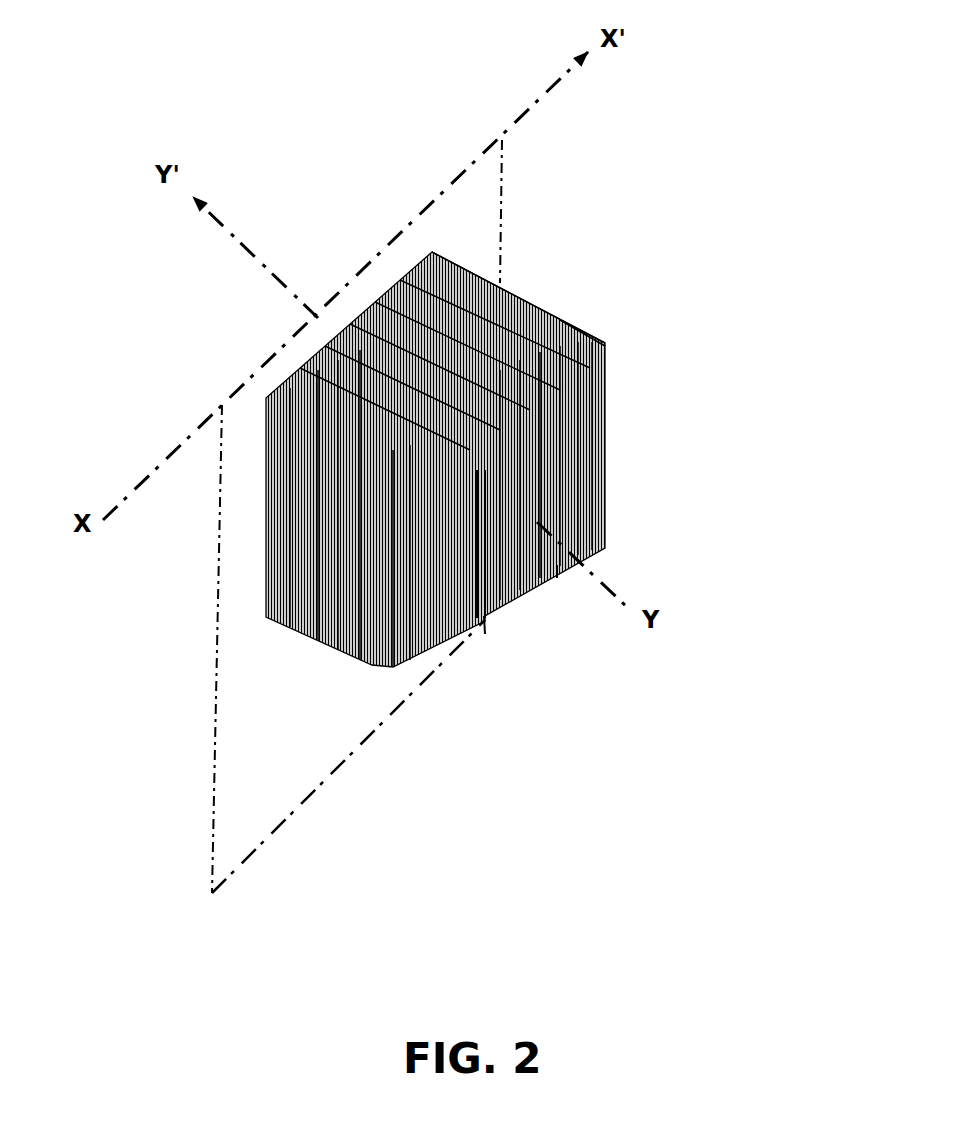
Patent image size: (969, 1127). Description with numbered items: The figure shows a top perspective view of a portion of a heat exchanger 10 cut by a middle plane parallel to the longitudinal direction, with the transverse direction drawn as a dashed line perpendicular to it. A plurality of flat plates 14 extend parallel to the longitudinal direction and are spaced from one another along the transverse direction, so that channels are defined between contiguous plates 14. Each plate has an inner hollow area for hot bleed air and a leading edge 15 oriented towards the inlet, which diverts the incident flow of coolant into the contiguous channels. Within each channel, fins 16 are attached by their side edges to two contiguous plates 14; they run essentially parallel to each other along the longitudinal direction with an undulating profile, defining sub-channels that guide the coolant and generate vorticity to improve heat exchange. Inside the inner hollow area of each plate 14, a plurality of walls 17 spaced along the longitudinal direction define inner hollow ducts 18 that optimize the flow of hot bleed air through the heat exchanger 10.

The heat exchanger 10 is at (692, 510).
The flat plates 14 is at (522, 437).
The leading edge 15 is at (488, 617).
The fins 16 is at (300, 573).
The walls 17 is at (383, 333).
The inner hollow ducts 18 is at (563, 313).